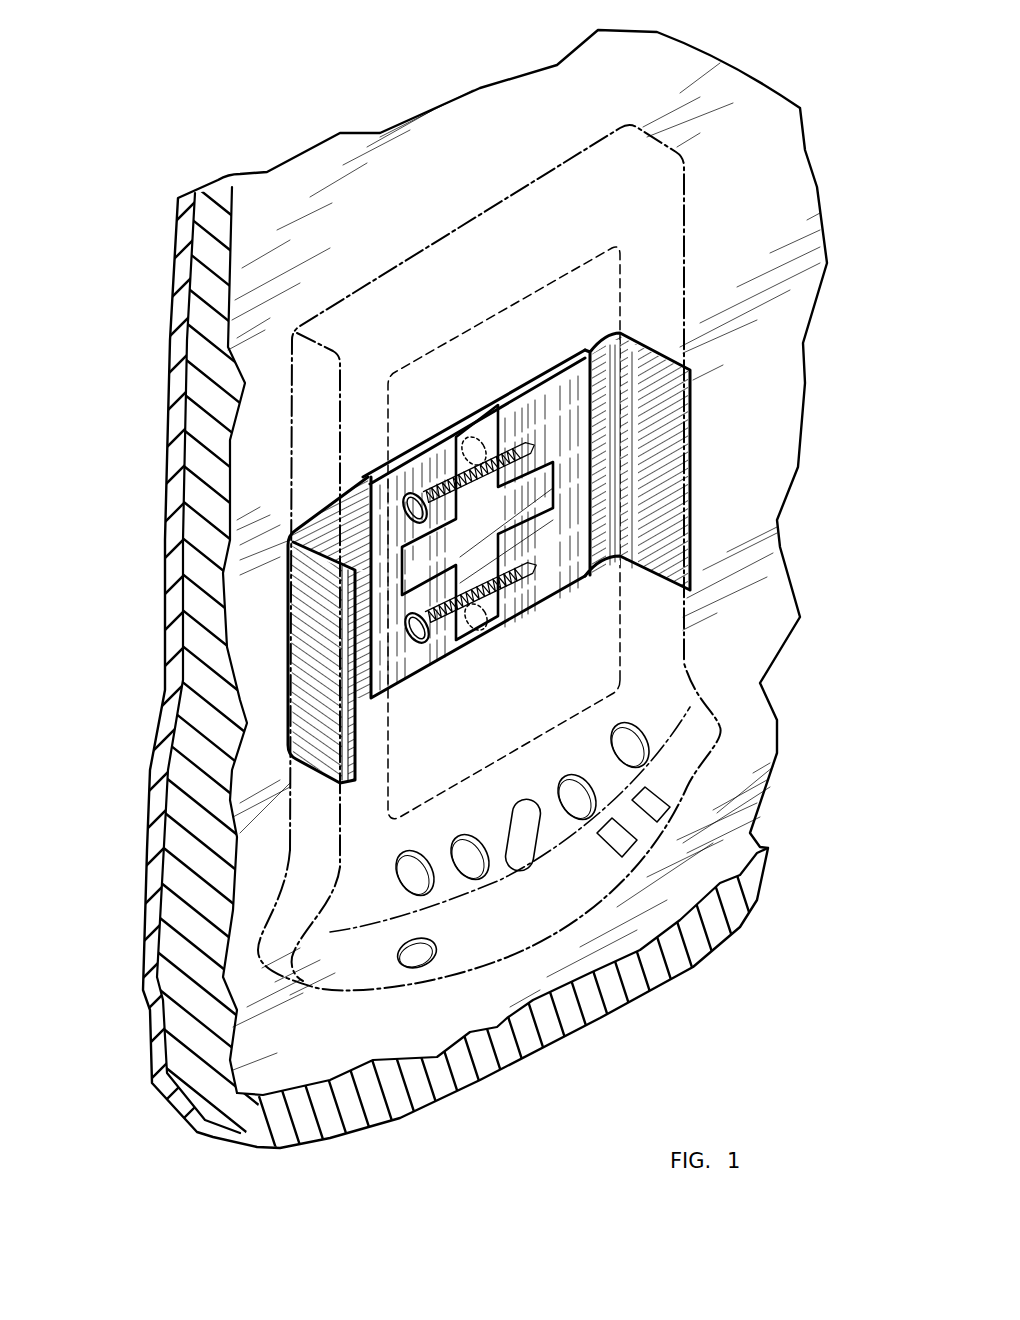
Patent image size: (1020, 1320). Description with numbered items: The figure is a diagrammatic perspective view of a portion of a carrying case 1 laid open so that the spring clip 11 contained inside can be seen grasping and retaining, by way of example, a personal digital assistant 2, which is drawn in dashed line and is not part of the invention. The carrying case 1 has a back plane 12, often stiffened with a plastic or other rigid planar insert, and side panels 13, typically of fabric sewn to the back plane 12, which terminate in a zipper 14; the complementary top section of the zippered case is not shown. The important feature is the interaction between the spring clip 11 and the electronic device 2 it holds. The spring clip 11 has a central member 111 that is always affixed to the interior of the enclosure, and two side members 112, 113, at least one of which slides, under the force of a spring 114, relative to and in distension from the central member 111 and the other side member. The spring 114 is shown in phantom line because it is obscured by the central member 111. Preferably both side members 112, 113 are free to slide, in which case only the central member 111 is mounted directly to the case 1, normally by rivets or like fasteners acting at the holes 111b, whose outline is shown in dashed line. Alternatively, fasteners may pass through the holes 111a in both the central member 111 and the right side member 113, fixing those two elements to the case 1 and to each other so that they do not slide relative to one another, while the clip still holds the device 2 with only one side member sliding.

The carrying case 1 is at (410, 1032).
The personal digital assistant 2 is at (502, 719).
The spring clip 11 is at (470, 477).
The central member 111 is at (498, 525).
The holes 111a is at (412, 642).
The holes 111b is at (468, 632).
The side member 112 is at (692, 456).
The side member 113 is at (288, 566).
The spring 114 is at (483, 440).
The back plane 12 is at (381, 1042).
The side panels 13 is at (182, 952).
The zipper 14 is at (153, 1001).